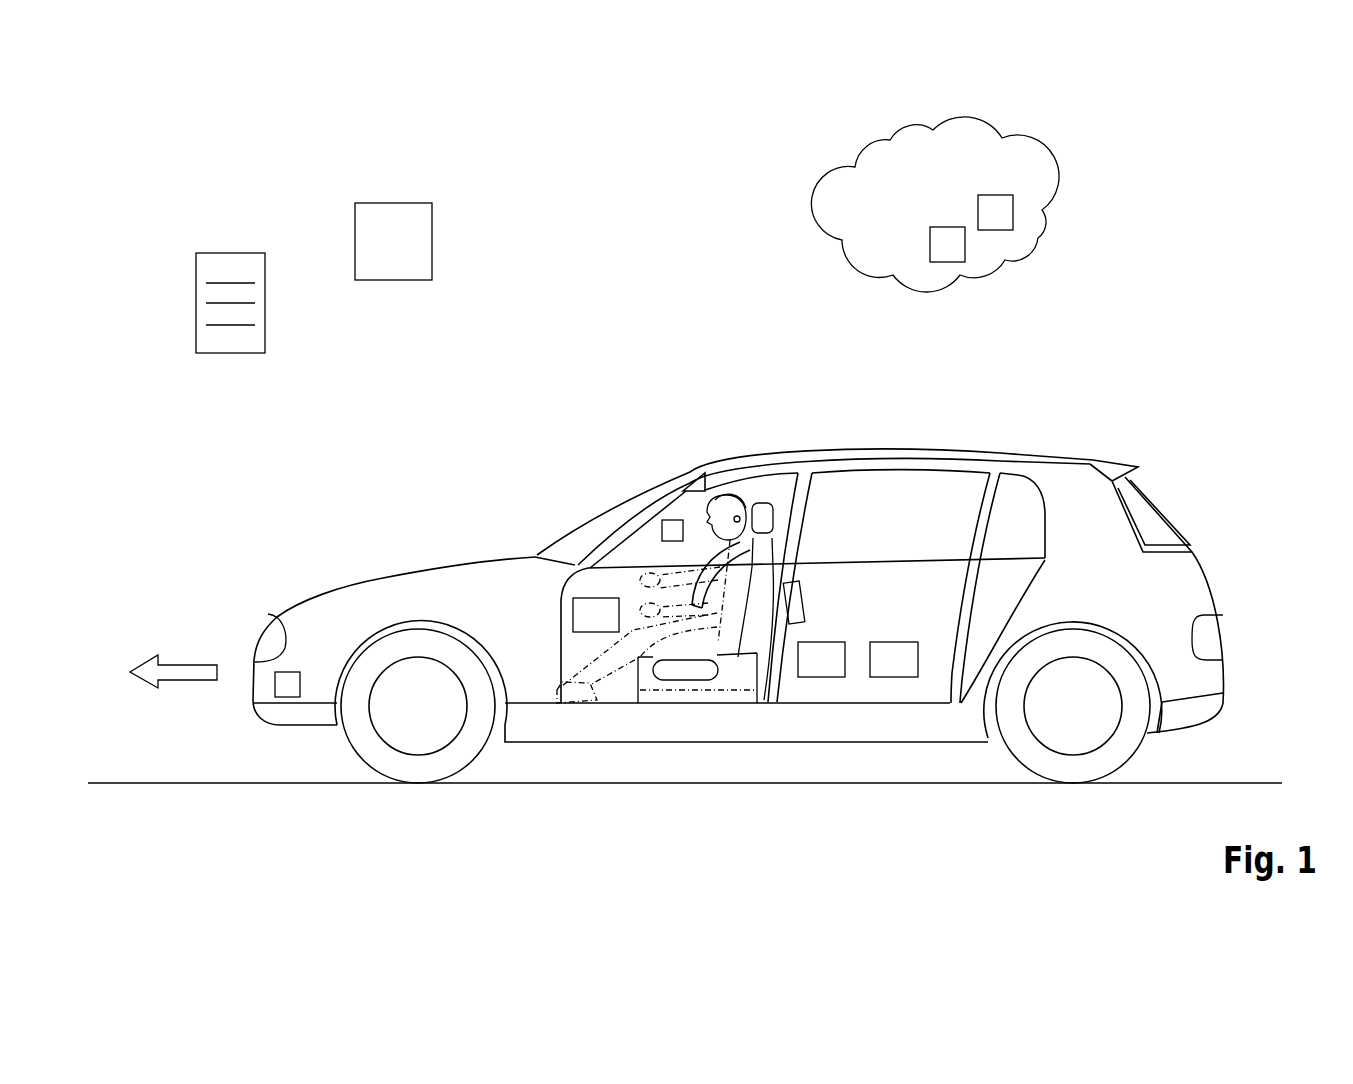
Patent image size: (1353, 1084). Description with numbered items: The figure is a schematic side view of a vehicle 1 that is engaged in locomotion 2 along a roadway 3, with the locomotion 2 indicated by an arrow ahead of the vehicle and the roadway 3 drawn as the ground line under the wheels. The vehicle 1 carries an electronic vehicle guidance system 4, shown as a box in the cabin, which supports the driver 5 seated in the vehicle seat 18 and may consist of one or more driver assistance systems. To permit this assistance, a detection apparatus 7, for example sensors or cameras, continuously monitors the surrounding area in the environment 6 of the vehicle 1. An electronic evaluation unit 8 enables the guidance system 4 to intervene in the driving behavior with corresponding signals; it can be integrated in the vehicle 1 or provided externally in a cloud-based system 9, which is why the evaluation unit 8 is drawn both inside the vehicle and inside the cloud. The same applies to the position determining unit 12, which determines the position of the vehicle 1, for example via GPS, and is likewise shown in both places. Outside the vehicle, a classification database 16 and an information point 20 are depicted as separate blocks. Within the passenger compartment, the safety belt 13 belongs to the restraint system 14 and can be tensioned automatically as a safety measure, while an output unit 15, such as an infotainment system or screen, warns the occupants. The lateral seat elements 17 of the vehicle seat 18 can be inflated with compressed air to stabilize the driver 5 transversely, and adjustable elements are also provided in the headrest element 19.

The vehicle 1 is at (1023, 452).
The locomotion 2 is at (185, 682).
The roadway 3 is at (237, 785).
The electronic vehicle guidance system 4 is at (597, 618).
The driver 5 is at (727, 494).
The environment 6 is at (480, 451).
The detection apparatus 7 is at (287, 687).
The electronic evaluation unit 8 is at (817, 663).
The cloud-based system 9 is at (840, 258).
The position determining unit 12 is at (893, 663).
The safety belt 13 is at (710, 560).
The restraint system 14 is at (257, 633).
The output unit 15 is at (662, 528).
The classification database 16 is at (265, 332).
The lateral seat element 17 is at (678, 672).
The vehicle seat 18 is at (732, 680).
The headrest element 19 is at (763, 503).
The information point 20 is at (432, 240).